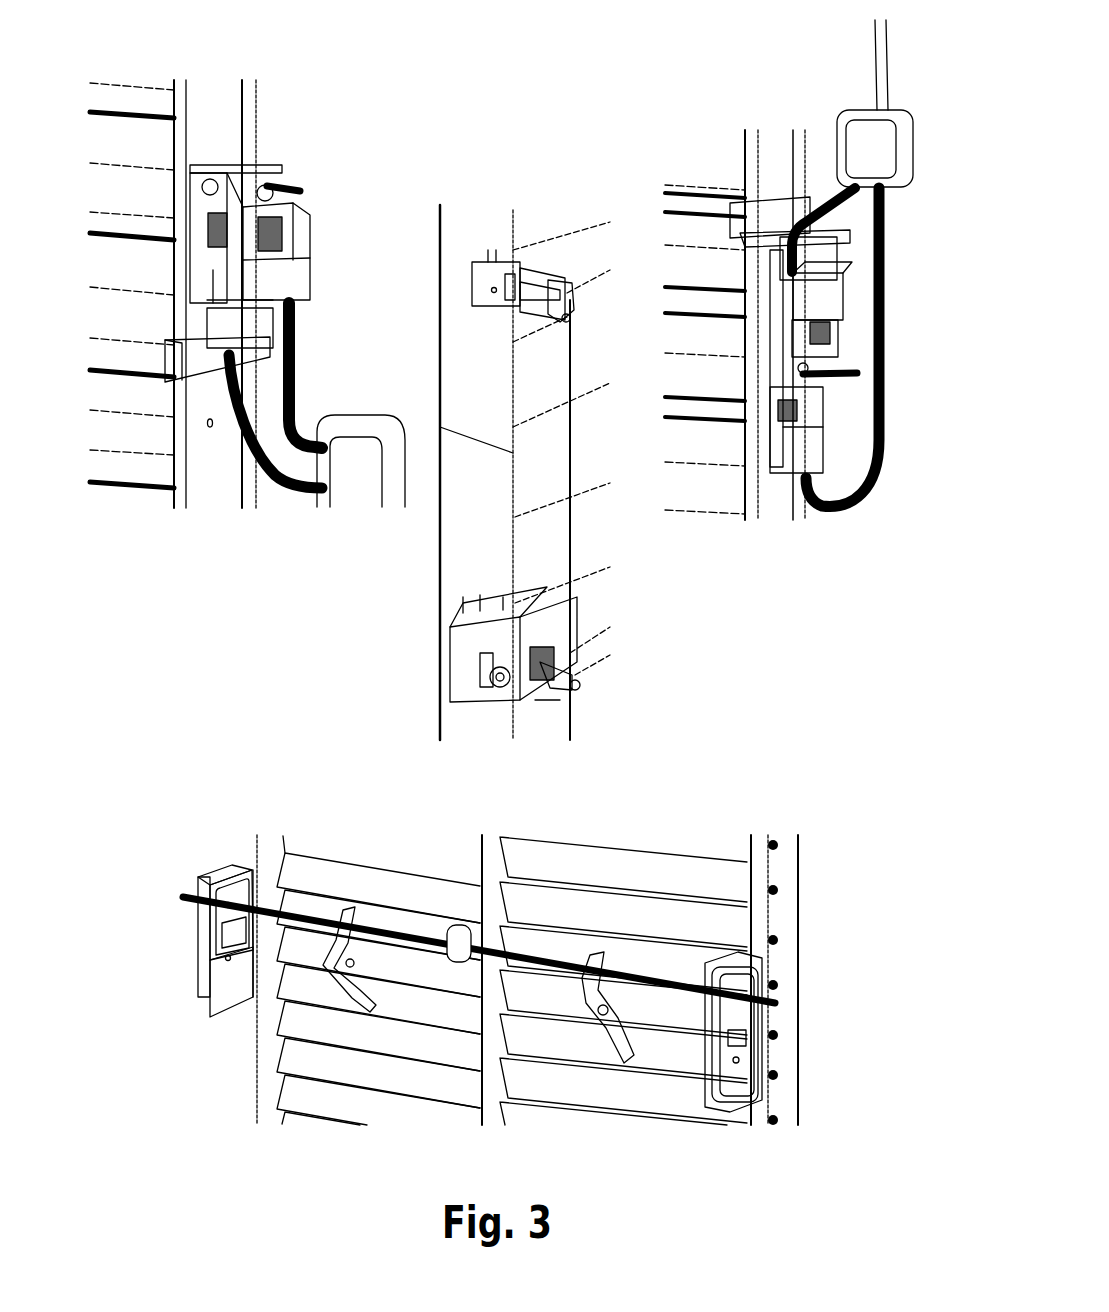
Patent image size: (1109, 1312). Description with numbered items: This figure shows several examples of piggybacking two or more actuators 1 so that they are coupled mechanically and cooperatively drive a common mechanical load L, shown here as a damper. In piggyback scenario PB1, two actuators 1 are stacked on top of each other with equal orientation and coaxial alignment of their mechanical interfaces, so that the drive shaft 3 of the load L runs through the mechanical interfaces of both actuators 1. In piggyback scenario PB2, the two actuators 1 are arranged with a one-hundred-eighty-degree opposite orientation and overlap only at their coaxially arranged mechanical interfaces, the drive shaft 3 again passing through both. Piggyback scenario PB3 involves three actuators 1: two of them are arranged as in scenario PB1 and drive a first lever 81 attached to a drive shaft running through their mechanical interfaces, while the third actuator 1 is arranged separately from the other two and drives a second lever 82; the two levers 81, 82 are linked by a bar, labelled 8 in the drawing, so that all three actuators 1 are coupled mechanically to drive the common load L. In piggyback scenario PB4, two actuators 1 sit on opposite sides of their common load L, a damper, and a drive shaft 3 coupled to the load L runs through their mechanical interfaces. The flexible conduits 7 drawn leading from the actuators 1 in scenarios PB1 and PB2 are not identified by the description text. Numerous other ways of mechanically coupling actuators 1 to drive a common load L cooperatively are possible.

The actuator 1 is at (213, 140).
The drive shaft 3 is at (290, 186).
The flexible cable conduit 7 is at (297, 382).
The cord 8 is at (575, 526).
The first lever 81 is at (560, 690).
The second lever 82 is at (567, 296).
The common load L is at (140, 66).
The piggyback scenario PB1 is at (196, 394).
The piggyback scenario PB2 is at (738, 186).
The piggyback scenario PB3 is at (426, 568).
The piggyback scenario PB4 is at (228, 1052).